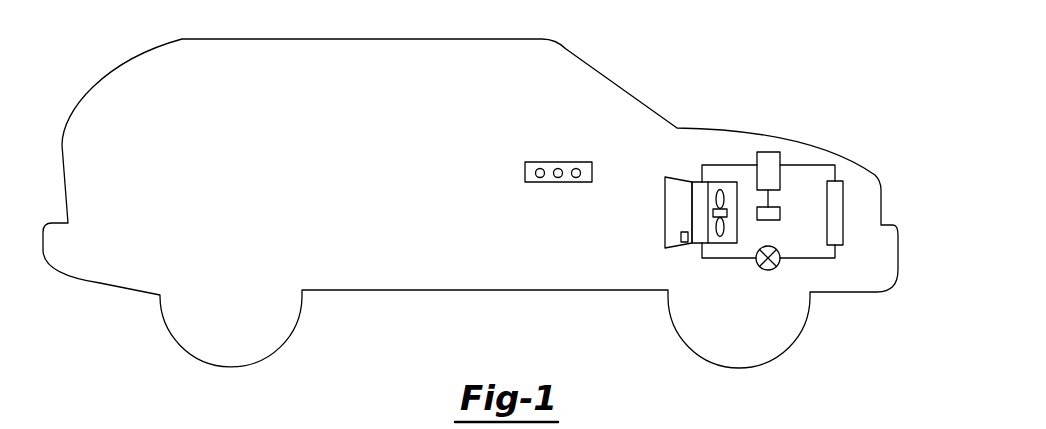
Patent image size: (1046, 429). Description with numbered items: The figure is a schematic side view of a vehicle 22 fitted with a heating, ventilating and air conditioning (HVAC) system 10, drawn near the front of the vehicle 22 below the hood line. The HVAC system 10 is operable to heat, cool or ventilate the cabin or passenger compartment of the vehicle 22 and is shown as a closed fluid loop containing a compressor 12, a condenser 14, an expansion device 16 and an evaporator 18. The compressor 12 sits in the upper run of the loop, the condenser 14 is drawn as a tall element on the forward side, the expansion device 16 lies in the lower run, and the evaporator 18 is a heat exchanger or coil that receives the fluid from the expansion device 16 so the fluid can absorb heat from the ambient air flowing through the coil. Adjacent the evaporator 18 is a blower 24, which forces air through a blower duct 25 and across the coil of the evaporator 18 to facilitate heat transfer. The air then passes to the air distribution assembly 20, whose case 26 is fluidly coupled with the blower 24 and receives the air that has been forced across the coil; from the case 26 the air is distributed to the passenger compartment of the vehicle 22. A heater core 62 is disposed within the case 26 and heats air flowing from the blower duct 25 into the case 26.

The heating, ventilating and air conditioning (HVAC) system 10 is at (768, 128).
The compressor 12 is at (780, 157).
The condenser 14 is at (843, 192).
The expansion device 16 is at (772, 270).
The evaporator 18 is at (700, 244).
The air distribution assembly 20 is at (675, 263).
The vehicle 22 is at (623, 80).
The blower 24 is at (723, 195).
The blower duct 25 is at (714, 182).
The case 26 is at (677, 178).
The heater core 62 is at (681, 237).